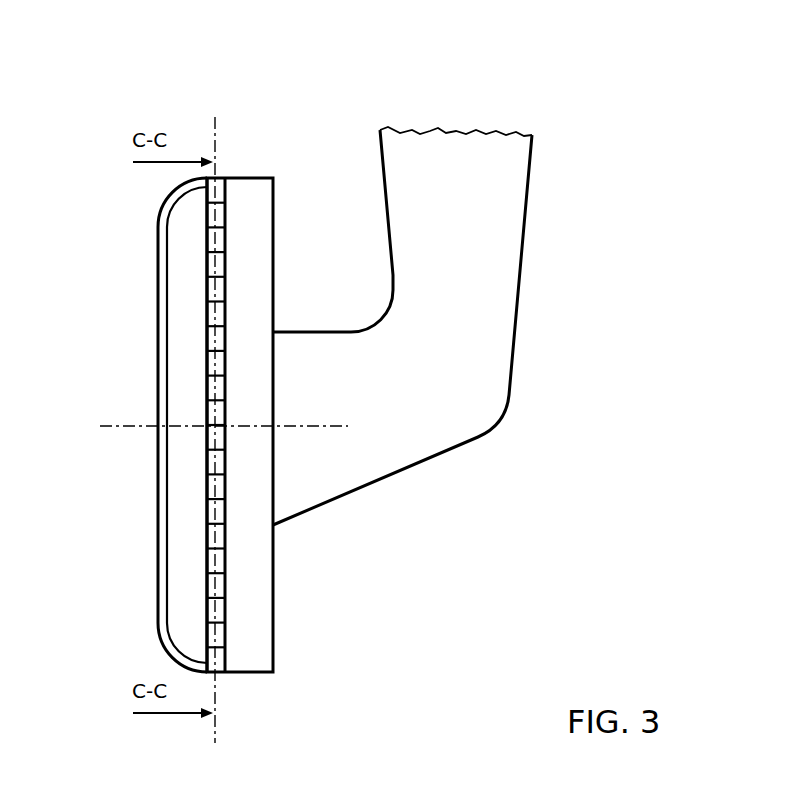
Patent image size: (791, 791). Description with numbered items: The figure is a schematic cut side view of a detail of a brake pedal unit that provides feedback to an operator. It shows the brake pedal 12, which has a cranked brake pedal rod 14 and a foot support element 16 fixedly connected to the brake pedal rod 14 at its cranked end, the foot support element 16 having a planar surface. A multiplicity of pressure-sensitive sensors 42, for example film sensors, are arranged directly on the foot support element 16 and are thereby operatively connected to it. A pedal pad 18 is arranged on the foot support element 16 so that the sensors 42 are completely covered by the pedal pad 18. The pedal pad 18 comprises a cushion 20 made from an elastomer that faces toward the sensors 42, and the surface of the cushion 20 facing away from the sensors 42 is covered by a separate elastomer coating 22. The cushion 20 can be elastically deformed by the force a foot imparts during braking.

The brake pedal 12 is at (407, 388).
The brake pedal rod 14 is at (480, 252).
The foot support element 16 is at (242, 208).
The pedal pad 18 is at (128, 425).
The cushion 20 is at (188, 265).
The elastomer coating 22 is at (158, 363).
The pressure-sensitive sensors 42 is at (212, 463).